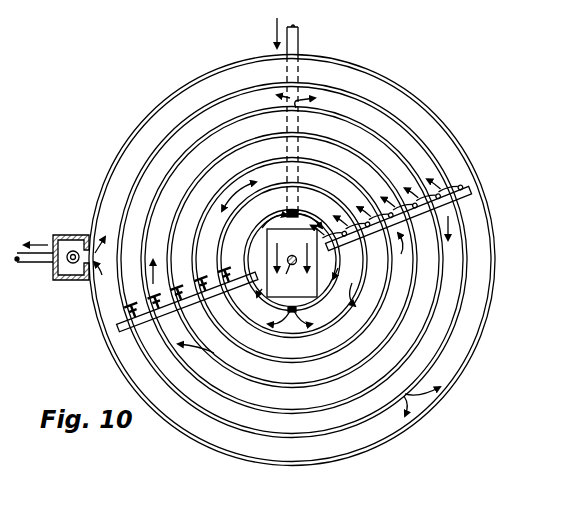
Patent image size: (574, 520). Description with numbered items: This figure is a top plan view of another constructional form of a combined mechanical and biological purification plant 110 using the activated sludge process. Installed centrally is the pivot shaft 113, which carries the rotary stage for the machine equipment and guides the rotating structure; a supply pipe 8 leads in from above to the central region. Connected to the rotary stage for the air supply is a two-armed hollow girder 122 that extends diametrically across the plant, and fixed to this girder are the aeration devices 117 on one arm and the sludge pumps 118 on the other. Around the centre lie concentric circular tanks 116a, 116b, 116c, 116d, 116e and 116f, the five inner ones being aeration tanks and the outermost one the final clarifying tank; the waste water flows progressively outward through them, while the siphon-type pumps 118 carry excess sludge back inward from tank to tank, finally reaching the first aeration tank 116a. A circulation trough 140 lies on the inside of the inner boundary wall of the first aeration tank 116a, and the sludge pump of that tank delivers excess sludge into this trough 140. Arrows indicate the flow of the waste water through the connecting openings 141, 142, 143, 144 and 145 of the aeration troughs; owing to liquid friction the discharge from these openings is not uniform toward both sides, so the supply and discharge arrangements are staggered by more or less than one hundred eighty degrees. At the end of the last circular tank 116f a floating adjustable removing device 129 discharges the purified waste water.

The supply pipe 8 is at (298, 42).
The apparatus body with concentric rings 110 is at (292, 268).
The pivot shaft 113 is at (297, 276).
The first aeration tank 116a is at (292, 260).
The aeration tank 116b is at (292, 260).
The aeration tank 116c is at (292, 260).
The aeration tank 116d is at (292, 260).
The aeration tank 116e is at (292, 260).
The final clarifying tank 116f is at (233, 426).
The aeration devices 117 is at (213, 285).
The sludge pumps 118 is at (387, 213).
The two-armed hollow girder 122 is at (217, 291).
The floating adjustable removing device 129 is at (73, 250).
The circulation trough 140 is at (250, 247).
The connecting opening 141 is at (241, 206).
The connecting opening 142 is at (315, 261).
The connecting opening 143 is at (209, 355).
The connecting opening 144 is at (313, 104).
The connecting opening 145 is at (405, 401).